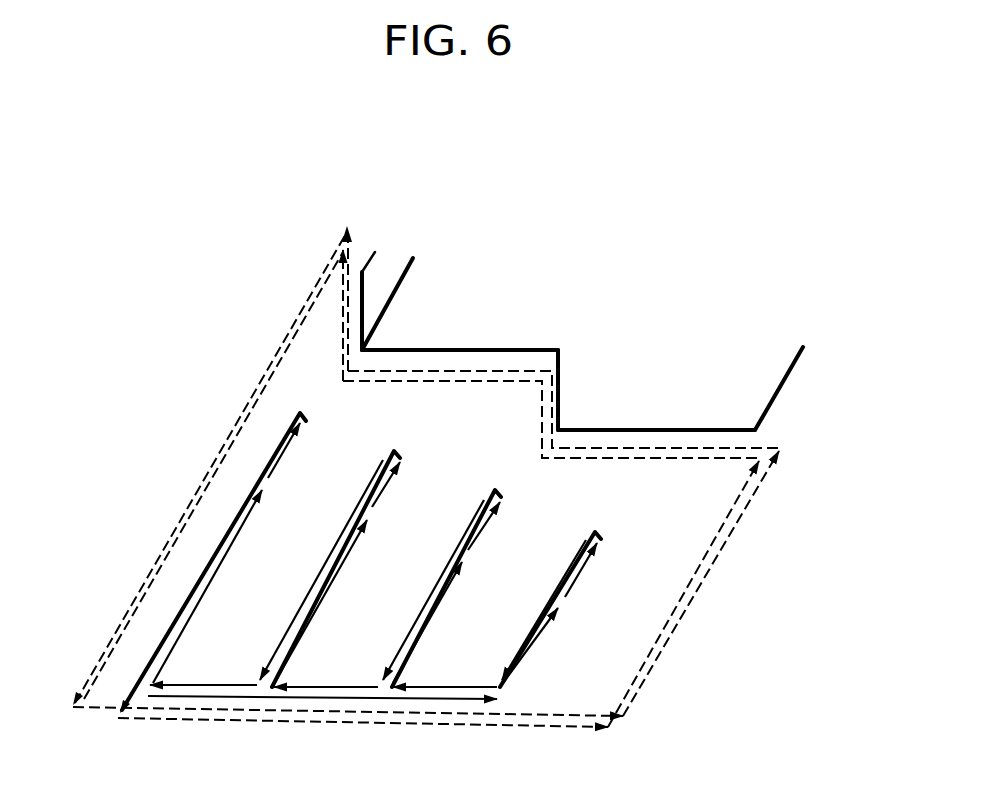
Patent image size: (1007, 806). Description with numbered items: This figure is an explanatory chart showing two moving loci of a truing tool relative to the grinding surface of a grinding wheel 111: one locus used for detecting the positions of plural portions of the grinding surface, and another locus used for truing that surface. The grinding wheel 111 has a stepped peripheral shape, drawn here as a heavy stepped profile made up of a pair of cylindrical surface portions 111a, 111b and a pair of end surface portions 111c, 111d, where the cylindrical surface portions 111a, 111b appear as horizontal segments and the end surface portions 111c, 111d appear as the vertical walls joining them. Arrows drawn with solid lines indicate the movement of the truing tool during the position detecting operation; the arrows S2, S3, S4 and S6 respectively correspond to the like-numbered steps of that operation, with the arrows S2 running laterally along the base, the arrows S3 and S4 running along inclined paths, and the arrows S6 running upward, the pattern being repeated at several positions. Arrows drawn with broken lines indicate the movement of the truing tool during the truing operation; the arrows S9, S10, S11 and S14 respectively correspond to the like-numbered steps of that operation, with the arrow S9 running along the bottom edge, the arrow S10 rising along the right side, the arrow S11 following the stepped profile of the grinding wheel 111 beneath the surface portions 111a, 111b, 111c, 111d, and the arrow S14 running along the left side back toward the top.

The grinding wheel 111 is at (533, 351).
The cylindrical surface portion 111a is at (742, 436).
The cylindrical surface portion 111b is at (516, 352).
The end surface portion 111c is at (559, 356).
The end surface portion 111d is at (362, 297).
The step S2 arrow S2 is at (323, 667).
The step S3 arrow S3 is at (406, 570).
The step S4 arrow S4 is at (441, 510).
The step S6 arrow S6 is at (355, 586).
The step S9 arrow S9 is at (348, 737).
The step S10 arrow S10 is at (693, 589).
The step S11 arrow S11 is at (561, 414).
The step S14 arrow S14 is at (212, 465).